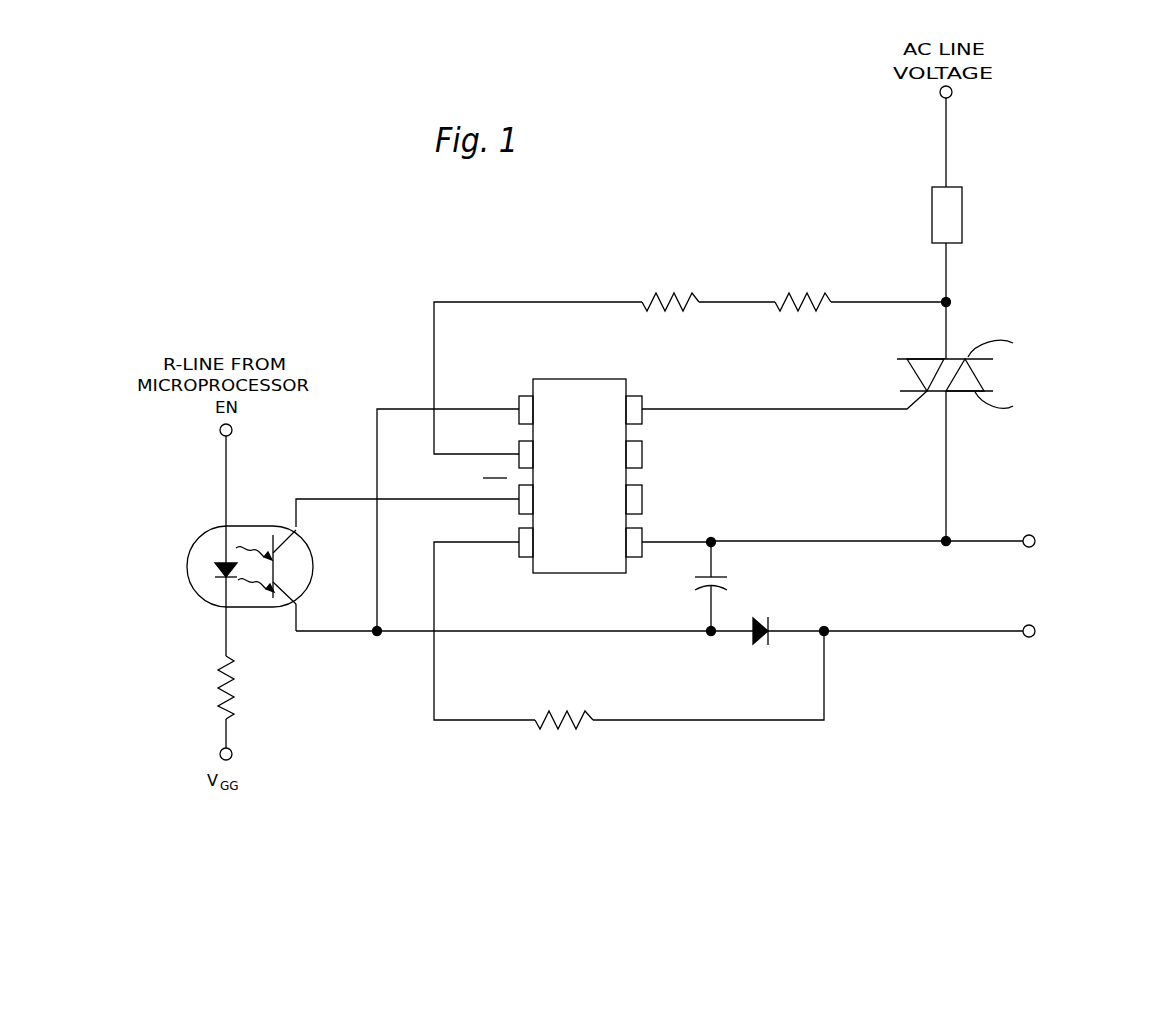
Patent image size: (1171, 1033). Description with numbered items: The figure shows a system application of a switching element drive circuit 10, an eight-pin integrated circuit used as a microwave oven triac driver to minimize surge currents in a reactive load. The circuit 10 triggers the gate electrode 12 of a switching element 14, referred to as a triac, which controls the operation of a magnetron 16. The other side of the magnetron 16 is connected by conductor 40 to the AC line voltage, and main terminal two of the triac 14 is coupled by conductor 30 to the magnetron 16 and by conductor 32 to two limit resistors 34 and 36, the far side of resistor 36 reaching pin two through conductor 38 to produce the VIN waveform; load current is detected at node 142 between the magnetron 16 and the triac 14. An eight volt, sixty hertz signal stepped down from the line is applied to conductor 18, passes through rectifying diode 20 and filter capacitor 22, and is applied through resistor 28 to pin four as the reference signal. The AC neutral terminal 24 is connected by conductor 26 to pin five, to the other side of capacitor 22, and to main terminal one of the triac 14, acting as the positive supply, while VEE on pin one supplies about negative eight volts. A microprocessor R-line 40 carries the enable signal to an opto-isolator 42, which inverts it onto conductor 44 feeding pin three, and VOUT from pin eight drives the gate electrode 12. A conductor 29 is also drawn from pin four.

The switching element drive circuit 10 is at (580, 382).
The gate electrode 12 is at (818, 407).
The switching element (triac) 14 is at (961, 398).
The magnetron 16 is at (932, 237).
The conductor 18 is at (900, 635).
The rectifying diode 20 is at (760, 648).
The filter capacitor 22 is at (729, 582).
The AC neutral terminal 24 is at (1032, 534).
The ACN conductor 26 is at (948, 512).
The resistor 28 is at (570, 712).
The line 29 is at (436, 590).
The conductor 30 is at (948, 290).
The conductor 32 is at (878, 300).
The limit resistor 34 is at (808, 300).
The limit resistor 36 is at (675, 299).
The conductor 38 is at (553, 300).
The conductor / R-line 40 is at (948, 163).
The opto-isolator 42 is at (187, 568).
The conductor 44 is at (355, 498).
The node 142 is at (952, 302).